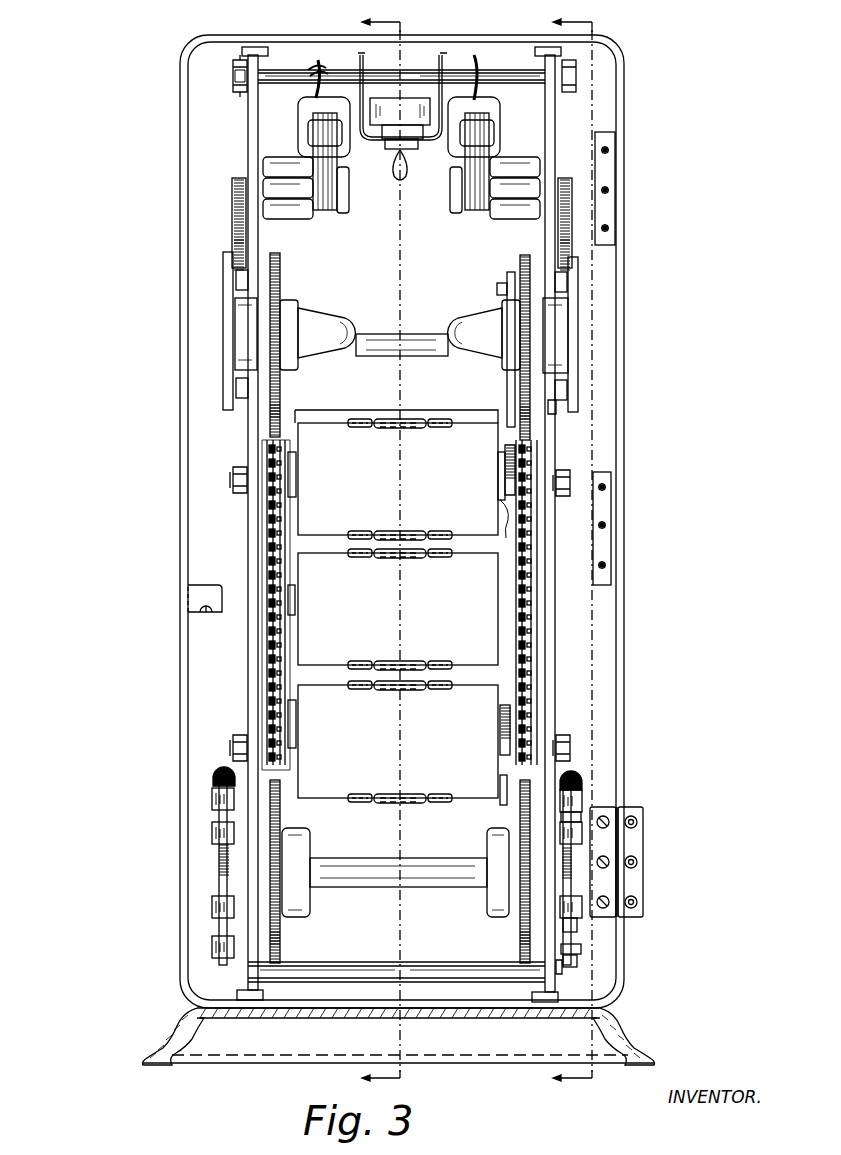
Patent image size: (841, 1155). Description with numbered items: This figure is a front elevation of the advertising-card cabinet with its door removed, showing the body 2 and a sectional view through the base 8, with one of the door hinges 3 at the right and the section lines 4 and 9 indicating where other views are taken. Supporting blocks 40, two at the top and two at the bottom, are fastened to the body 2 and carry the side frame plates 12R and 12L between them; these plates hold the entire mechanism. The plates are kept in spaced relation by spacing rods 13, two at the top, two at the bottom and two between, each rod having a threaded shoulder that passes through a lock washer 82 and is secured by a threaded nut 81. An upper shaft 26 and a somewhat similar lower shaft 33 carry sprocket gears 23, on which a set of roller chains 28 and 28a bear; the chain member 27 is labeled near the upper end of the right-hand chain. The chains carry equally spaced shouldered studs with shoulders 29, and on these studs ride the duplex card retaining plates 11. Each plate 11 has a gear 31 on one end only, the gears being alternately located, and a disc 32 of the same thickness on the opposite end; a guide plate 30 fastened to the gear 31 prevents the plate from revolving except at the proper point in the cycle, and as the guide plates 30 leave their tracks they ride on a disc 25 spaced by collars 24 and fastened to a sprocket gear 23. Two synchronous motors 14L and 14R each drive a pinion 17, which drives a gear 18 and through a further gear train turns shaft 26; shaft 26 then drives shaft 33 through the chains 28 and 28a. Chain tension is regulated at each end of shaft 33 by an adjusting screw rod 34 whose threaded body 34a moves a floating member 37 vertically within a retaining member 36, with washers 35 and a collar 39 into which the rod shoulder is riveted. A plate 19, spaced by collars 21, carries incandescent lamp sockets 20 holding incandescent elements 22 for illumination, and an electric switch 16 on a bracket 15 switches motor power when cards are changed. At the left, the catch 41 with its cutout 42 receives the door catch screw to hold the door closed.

The body 2 is at (625, 122).
The hinge 3 is at (644, 848).
The section line 4- 4 is at (393, 554).
The base 8 is at (636, 1046).
The commercial lock 9 is at (583, 553).
The duplex card retaining plate 11 is at (490, 422).
The side frame plate 12L is at (248, 126).
The side frame plate 12R is at (556, 120).
The spacing rod 13 is at (492, 72).
The synchronous motor 14L is at (290, 222).
The synchronous motor 14R is at (510, 222).
The bracket 15 is at (440, 60).
The electric switch 16 is at (410, 165).
The pinion 17 is at (236, 180).
The gear 18 is at (592, 358).
The plate 19 is at (224, 315).
The incandescent lamp socket 20 is at (562, 345).
The collar 21 is at (566, 404).
The incandescent element 22 is at (340, 318).
The sprocket gear 23 is at (300, 302).
The collar 24 is at (507, 278).
The disc 25 is at (500, 290).
The shaft 26 is at (383, 335).
The chain guide 27 is at (530, 452).
The roller chain 28 is at (538, 531).
The roller chain 28a is at (267, 522).
The shoulder 29 is at (502, 527).
The guide plate 30 is at (506, 704).
The gear 31 is at (498, 468).
The disc 32 is at (297, 472).
The shaft 33 is at (450, 858).
The adjusting screw rod 34 is at (577, 770).
The threaded body 34a is at (586, 936).
The washer 35 is at (583, 797).
The retaining member 36 is at (582, 808).
The floating member 37 is at (583, 922).
The collar 39 is at (580, 968).
The supporting block 40 is at (575, 52).
The catch 41 is at (216, 614).
The cutout 42 is at (202, 610).
The threaded nut 81 is at (233, 65).
The lock washer 82 is at (240, 92).